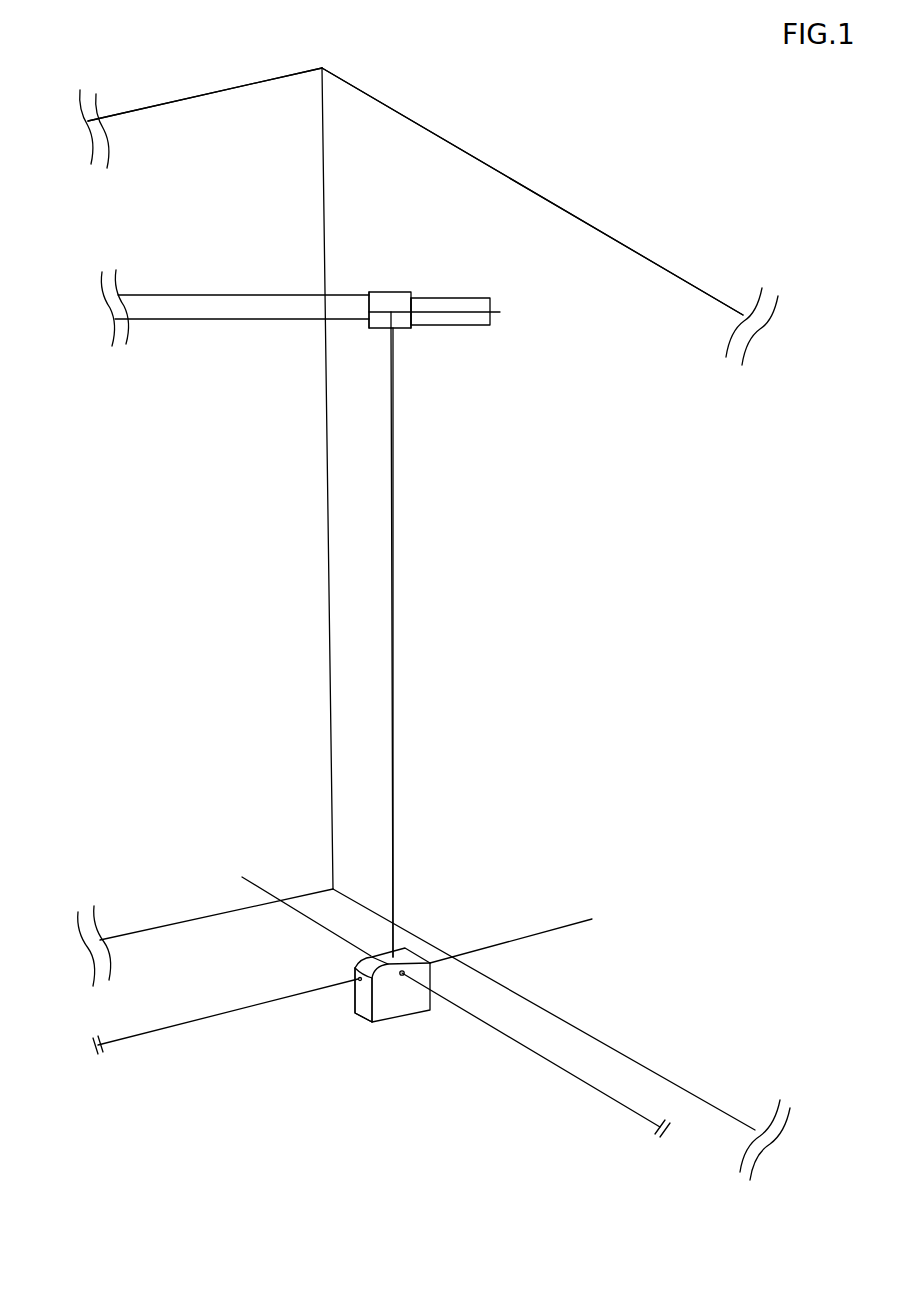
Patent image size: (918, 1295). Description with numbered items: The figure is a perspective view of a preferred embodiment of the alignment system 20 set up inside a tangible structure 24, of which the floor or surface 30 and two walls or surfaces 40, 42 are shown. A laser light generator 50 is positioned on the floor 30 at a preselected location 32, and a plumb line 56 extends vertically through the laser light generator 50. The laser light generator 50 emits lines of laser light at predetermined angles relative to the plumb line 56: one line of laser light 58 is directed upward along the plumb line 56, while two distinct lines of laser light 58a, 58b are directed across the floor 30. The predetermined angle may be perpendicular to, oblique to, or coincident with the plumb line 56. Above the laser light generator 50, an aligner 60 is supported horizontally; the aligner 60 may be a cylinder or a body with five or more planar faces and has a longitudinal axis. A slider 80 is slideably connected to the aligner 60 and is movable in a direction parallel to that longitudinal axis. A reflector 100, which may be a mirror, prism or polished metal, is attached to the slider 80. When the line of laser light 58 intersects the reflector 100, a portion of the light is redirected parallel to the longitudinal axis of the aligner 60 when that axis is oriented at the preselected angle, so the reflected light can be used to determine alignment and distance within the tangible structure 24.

The alignment system 20 is at (555, 478).
The tangible structure 24 is at (449, 269).
The floor or surface 30 is at (365, 1163).
The preselected location 32 is at (358, 1022).
The wall or surface 40 is at (648, 622).
The wall or surface 42 is at (197, 600).
The laser light generator 50 is at (411, 1020).
The plumb line 56 is at (396, 646).
The line of laser light 58 is at (450, 322).
The line of laser light 58a is at (532, 939).
The line of laser light 58b is at (527, 1044).
The aligner 60 is at (209, 291).
The slider 80 is at (366, 331).
The reflector 100 is at (389, 310).